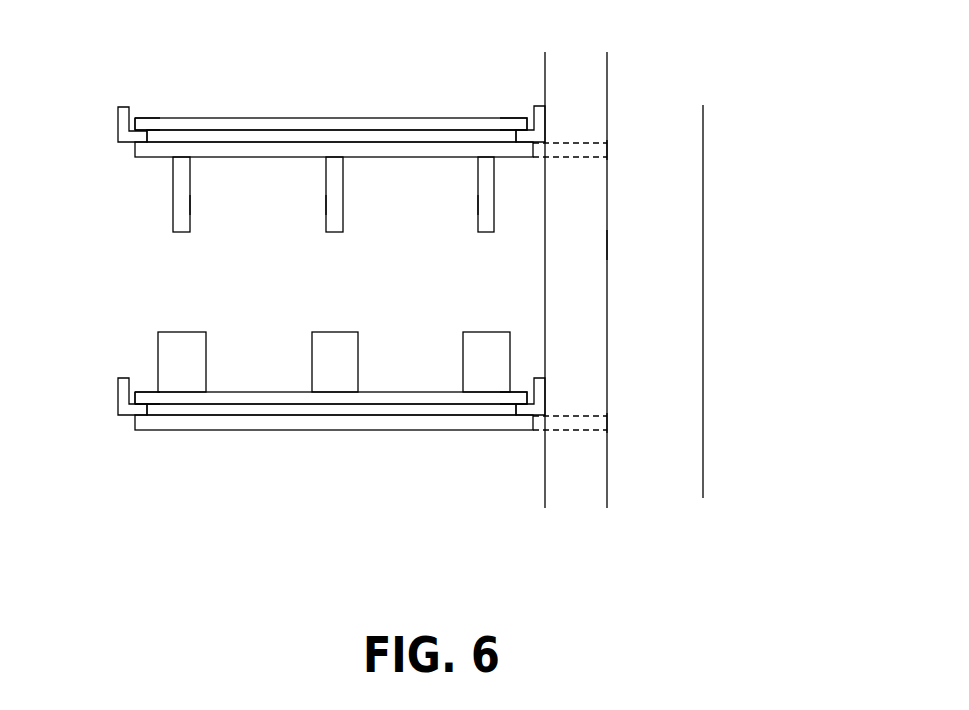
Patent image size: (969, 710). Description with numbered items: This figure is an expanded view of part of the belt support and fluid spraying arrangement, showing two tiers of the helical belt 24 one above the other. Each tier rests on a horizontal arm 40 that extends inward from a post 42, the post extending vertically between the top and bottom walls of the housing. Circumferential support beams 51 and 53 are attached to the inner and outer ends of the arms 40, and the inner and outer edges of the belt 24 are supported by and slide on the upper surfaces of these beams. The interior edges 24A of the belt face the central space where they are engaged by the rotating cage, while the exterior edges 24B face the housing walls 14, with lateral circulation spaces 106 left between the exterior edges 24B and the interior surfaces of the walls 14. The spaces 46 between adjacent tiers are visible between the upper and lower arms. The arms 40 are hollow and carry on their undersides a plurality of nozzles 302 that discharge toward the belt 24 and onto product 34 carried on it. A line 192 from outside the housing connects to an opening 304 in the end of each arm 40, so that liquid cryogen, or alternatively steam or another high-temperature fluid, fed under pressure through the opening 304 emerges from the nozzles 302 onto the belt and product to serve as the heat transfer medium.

The walls 14 is at (607, 244).
The belt 24 is at (337, 118).
The interior edges of the belt 24A is at (147, 118).
The exterior edges of the belt 24B is at (512, 119).
The product 34 is at (334, 362).
The horizontal arms 40 is at (152, 158).
The posts 42 is at (570, 280).
The spaces 46 is at (332, 227).
The circumferential support beam 51 is at (117, 125).
The circumferential support beam 53 is at (530, 106).
The lateral circulation spaces 106 is at (637, 280).
The line 192 is at (607, 148).
The nozzles 302 is at (326, 205).
The opening 304 is at (579, 150).